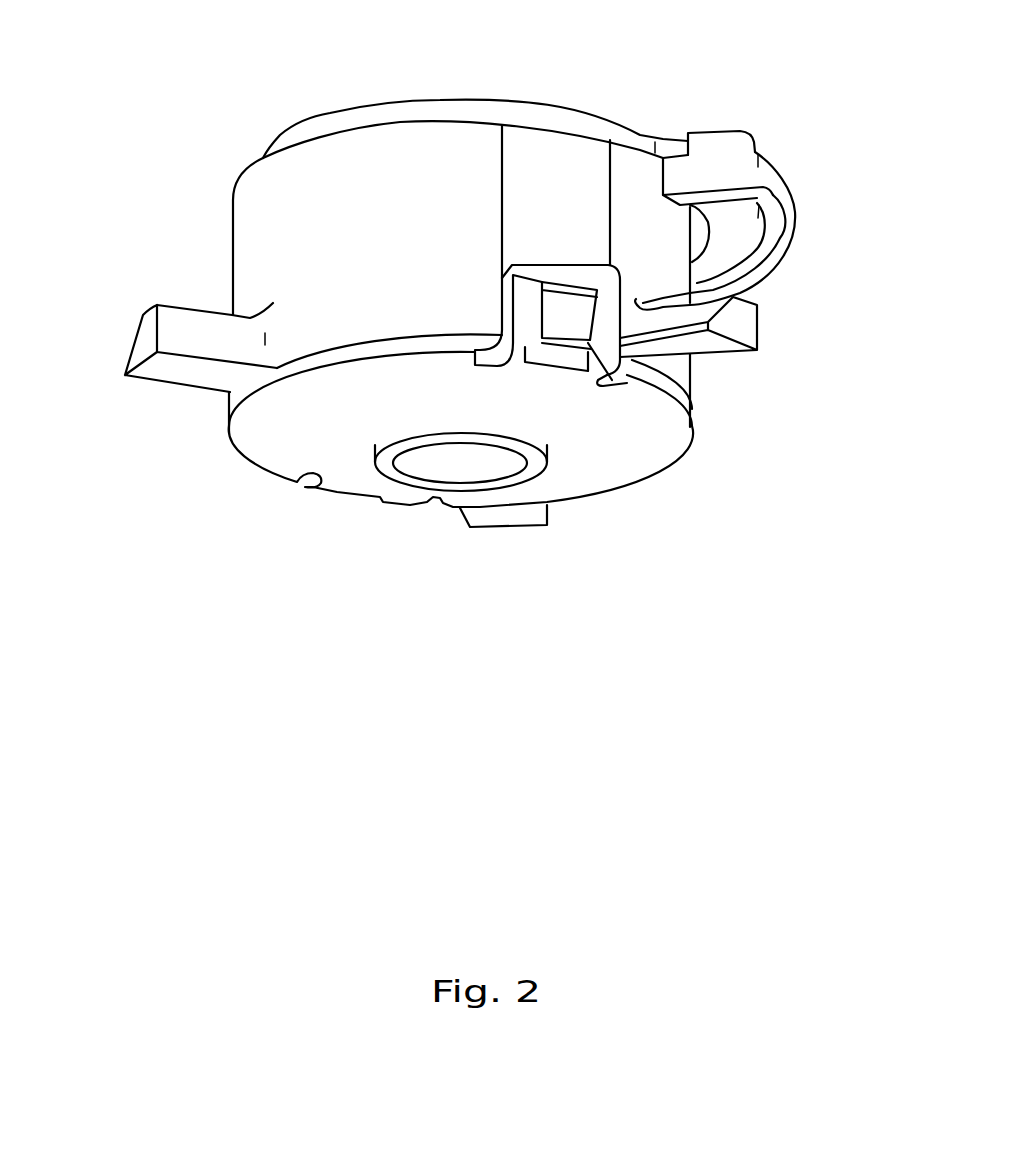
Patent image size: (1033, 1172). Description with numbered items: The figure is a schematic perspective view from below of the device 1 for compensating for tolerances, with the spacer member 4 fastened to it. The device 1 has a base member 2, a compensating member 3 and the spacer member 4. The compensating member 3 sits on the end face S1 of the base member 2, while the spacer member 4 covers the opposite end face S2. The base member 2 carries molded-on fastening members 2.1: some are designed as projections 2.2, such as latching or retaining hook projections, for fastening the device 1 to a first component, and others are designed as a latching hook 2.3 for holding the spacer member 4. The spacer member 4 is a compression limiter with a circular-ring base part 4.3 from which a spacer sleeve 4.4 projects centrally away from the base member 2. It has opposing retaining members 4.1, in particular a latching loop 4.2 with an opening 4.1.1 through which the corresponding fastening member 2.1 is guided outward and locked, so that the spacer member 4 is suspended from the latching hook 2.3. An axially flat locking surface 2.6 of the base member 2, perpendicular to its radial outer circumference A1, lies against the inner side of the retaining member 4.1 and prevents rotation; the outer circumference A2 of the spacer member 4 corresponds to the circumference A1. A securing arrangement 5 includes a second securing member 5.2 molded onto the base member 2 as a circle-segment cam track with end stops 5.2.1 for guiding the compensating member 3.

The device 1 is at (280, 92).
The base member 2 is at (255, 210).
The fastening member 2.1 is at (503, 257).
The projection 2.2 is at (745, 335).
The latching hook 2.3 is at (558, 300).
The locking surface 2.6 is at (540, 150).
The compensating member 3 is at (598, 125).
The spacer member 4 is at (560, 487).
The retaining member 4.1 is at (555, 378).
The opening 4.1.1 is at (593, 343).
The latching loop 4.2 is at (527, 315).
The base part 4.3 is at (267, 440).
The spacer sleeve 4.4 is at (387, 462).
The securing arrangement 5 is at (808, 246).
The second securing member 5.2 is at (775, 192).
The end stop 5.2.1 is at (730, 140).
The radial outer circumference of the base member A1 is at (218, 178).
The outer circumference of the spacer member A2 is at (222, 405).
The end face of the base member S1 is at (828, 185).
The end face of the base member S2 is at (808, 373).